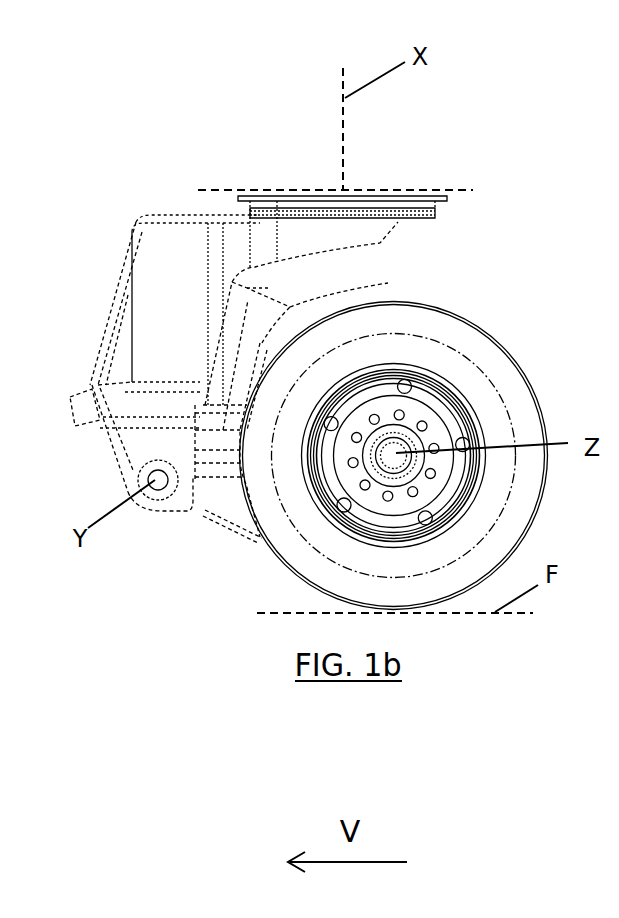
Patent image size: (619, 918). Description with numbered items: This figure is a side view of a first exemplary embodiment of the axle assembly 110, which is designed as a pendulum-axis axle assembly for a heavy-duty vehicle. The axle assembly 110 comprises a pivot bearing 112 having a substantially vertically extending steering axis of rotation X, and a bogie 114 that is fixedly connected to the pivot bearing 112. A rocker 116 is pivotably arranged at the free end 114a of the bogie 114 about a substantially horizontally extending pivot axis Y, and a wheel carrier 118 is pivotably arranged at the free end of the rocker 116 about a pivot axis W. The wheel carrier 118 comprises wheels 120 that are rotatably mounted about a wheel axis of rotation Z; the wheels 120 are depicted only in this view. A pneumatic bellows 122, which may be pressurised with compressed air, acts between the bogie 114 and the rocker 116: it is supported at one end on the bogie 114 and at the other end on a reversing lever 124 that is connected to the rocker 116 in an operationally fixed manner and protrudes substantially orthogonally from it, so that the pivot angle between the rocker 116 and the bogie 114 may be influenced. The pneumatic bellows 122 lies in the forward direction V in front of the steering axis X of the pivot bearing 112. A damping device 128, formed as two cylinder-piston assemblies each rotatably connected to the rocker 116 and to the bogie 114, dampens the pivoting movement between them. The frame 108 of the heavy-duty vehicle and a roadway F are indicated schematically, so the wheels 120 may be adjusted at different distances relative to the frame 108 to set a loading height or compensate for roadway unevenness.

The axle assembly 110 is at (118, 117).
The frame 108 is at (453, 190).
The pivot bearing 112 is at (300, 205).
The bogie 114 is at (152, 240).
The free end 114a is at (120, 455).
The rocker 116 is at (193, 508).
The wheel carrier 118 is at (407, 433).
The wheels 120 is at (462, 343).
The pneumatic bellows 122 is at (267, 295).
The reversing lever 124 is at (292, 320).
The damping device 128 is at (228, 453).